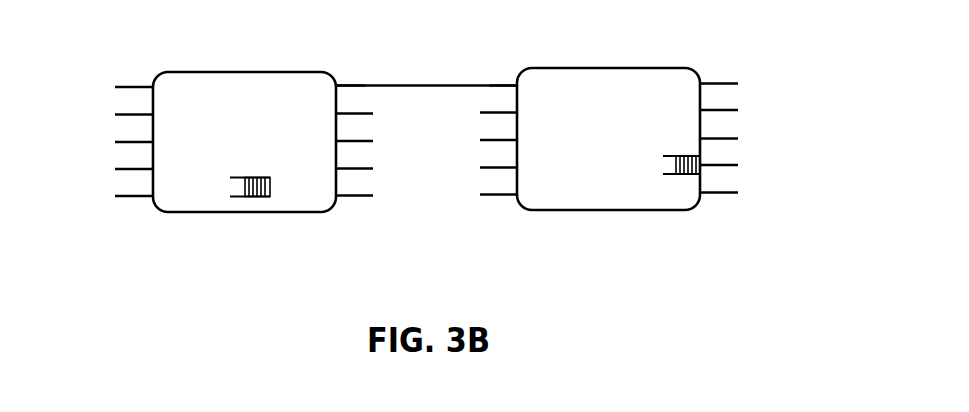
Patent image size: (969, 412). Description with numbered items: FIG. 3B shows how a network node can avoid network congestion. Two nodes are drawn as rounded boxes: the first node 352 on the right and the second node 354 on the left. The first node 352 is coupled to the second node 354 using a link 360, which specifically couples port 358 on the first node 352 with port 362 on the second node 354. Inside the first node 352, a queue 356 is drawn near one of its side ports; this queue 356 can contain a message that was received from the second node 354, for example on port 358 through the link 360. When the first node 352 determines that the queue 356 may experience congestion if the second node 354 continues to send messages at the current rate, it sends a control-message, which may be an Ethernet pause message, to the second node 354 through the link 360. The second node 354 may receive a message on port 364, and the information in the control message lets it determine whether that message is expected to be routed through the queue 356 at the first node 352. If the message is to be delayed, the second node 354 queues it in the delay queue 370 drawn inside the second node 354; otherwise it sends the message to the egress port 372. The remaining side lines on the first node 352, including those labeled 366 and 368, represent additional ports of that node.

The first node 352 is at (670, 246).
The second node 354 is at (320, 248).
The queue 356 is at (673, 156).
The port 358 is at (525, 85).
The link 360 is at (426, 71).
The port 362 is at (329, 86).
The port 364 is at (114, 196).
The port of first node 366 is at (740, 165).
The port of first node 368 is at (740, 110).
The delay queue 370 is at (250, 175).
The egress port 372 is at (375, 196).